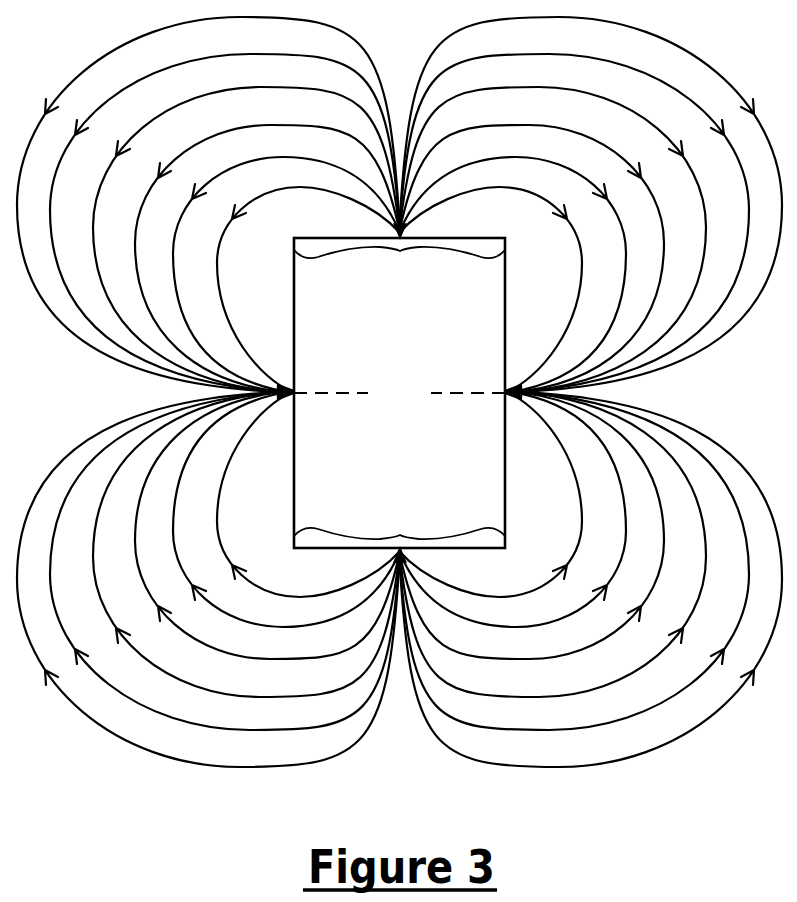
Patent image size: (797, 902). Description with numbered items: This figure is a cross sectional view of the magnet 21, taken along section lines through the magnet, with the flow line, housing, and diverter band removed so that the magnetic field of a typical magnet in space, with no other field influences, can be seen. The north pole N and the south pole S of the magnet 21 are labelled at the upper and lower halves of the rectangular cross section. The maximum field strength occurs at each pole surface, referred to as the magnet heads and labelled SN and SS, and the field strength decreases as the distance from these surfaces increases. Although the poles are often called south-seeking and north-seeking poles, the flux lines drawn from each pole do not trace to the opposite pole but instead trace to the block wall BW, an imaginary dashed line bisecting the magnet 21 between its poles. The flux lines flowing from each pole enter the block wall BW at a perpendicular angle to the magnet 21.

The magnet 21 is at (399, 393).
The north pole surface (magnet head) SN is at (399, 256).
The north pole N is at (399, 297).
The block wall BW is at (399, 391).
The south pole S is at (399, 486).
The south pole surface (magnet head) SS is at (399, 533).